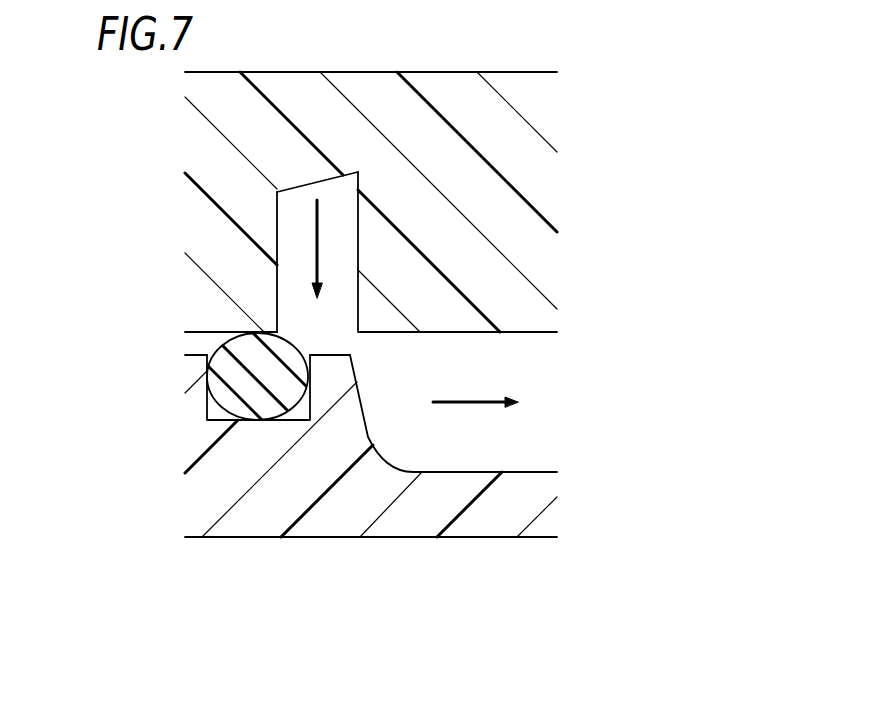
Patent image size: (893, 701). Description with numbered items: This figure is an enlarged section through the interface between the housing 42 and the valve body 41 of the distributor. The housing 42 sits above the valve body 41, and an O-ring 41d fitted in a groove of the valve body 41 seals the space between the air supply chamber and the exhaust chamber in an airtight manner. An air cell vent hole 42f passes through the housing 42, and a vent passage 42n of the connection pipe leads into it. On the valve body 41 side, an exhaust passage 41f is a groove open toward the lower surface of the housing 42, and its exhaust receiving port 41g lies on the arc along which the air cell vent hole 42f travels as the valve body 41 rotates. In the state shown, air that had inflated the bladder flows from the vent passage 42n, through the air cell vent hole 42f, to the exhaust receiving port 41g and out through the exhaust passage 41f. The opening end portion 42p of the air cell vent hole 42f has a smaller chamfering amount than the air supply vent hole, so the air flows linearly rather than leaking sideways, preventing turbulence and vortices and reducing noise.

The housing 42 is at (230, 123).
The vent passage 42n is at (277, 236).
The air cell vent hole 42f is at (277, 327).
The opening end portion 42p is at (358, 333).
The valve body 41 is at (232, 455).
The O-ring 41d is at (232, 370).
The exhaust receiving port 41g is at (354, 372).
The exhaust passage 41f is at (463, 472).